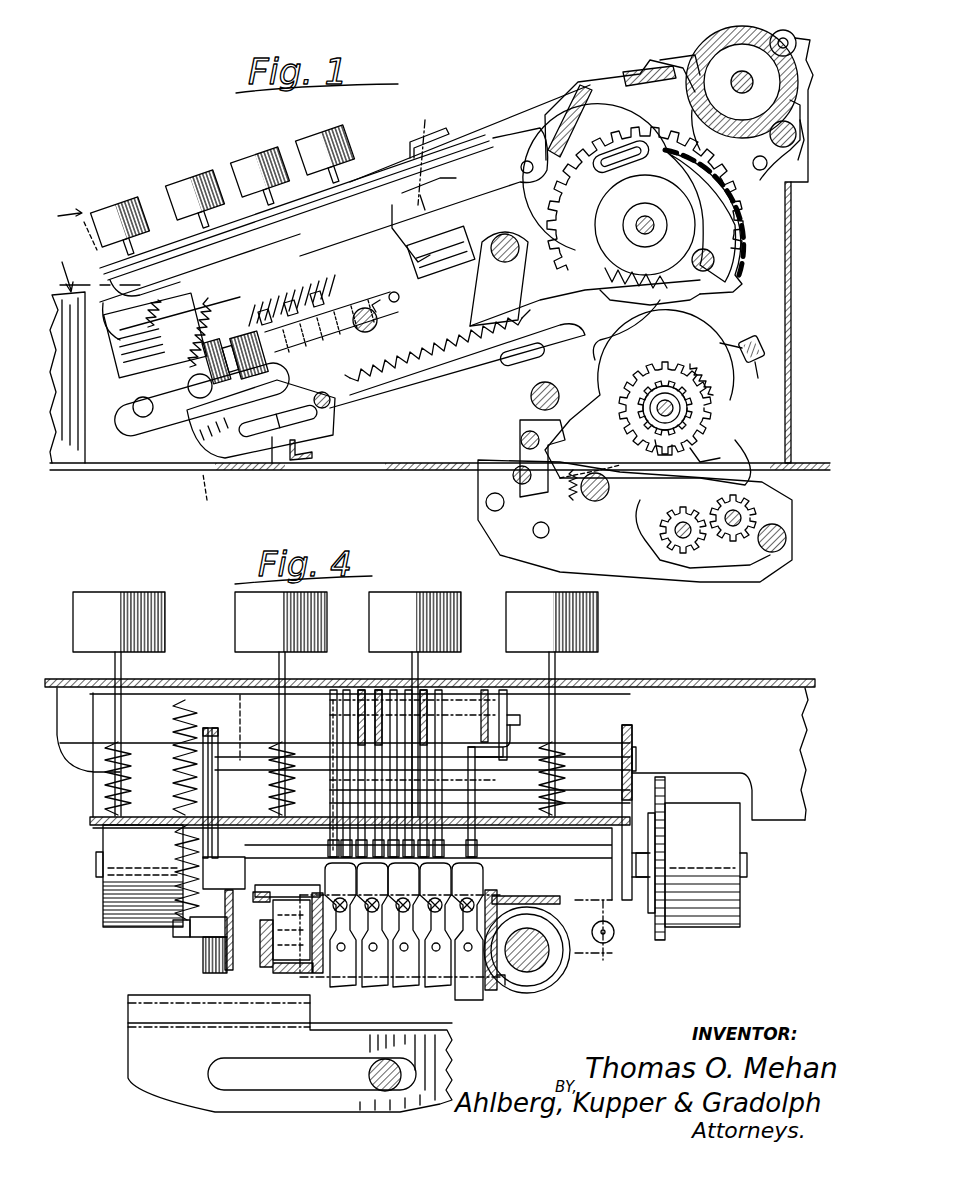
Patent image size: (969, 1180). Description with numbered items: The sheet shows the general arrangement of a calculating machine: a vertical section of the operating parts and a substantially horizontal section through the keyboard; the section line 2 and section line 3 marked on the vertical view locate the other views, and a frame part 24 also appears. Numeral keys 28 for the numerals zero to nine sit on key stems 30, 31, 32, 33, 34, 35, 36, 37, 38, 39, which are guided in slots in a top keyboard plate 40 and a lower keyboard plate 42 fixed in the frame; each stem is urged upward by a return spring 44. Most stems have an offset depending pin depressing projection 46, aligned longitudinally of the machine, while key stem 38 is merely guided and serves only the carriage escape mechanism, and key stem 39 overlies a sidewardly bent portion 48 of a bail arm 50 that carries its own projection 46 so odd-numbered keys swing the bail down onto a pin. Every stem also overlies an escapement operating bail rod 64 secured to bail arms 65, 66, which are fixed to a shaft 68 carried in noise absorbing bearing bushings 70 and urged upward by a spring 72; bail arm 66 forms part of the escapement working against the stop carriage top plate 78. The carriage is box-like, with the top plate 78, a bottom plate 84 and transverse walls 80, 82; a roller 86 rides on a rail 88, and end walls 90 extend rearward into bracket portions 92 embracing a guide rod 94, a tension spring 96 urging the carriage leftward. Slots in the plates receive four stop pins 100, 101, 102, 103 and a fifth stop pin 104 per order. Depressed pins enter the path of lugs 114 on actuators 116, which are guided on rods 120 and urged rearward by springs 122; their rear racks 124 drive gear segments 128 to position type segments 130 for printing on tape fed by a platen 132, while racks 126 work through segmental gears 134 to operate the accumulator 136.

In FIG. 1, the section line 2- 2 is at (250, 189).
In FIG. 1, the section line 3- 3 is at (133, 354).
In FIG. 4, the frame 24 is at (650, 852).
In FIG. 1, the numeral keys 28 is at (113, 226).
In FIG. 1, the key stem 30 is at (128, 238).
In FIG. 4, the key stem 30 is at (122, 673).
In FIG. 4, the key stem 31 is at (334, 690).
In FIG. 4, the key stem 32 is at (286, 673).
In FIG. 1, the key stem 33 is at (230, 197).
In FIG. 4, the key stem 33 is at (352, 690).
In FIG. 4, the key stem 34 is at (380, 690).
In FIG. 4, the key stem 35 is at (420, 670).
In FIG. 1, the key stem 36 is at (282, 192).
In FIG. 4, the key stem 36 is at (420, 690).
In FIG. 4, the key stem 37 is at (444, 690).
In FIG. 4, the key stem 38 is at (557, 671).
In FIG. 1, the key stem 39 is at (346, 166).
In FIG. 4, the key stem 39 is at (483, 690).
In FIG. 4, the top keyboard plate 40 is at (620, 680).
In FIG. 4, the lower keyboard plate 42 is at (238, 826).
In FIG. 4, the return spring 44 is at (108, 756).
In FIG. 4, the pin depressing projection 46 is at (328, 842).
In FIG. 4, the sidewardly bent portion 48 is at (480, 750).
In FIG. 4, the bail arm 50 is at (507, 705).
In FIG. 4, the escapement operating bail rod 64 is at (607, 750).
In FIG. 4, the bail arm 65 is at (634, 736).
In FIG. 4, the bail arm 66 is at (211, 736).
In FIG. 4, the shaft 68 is at (643, 870).
In FIG. 1, the noise absorbing bearing bushings 70 is at (168, 340).
In FIG. 4, the noise absorbing bearing bushings 70 is at (110, 892).
In FIG. 4, the spring 72 is at (180, 724).
In FIG. 4, the stop carriage top plate 78 is at (532, 896).
In FIG. 4, the transverse wall 80 is at (292, 976).
In FIG. 4, the transverse wall 82 is at (497, 910).
In FIG. 4, the bottom plate 84 is at (324, 973).
In FIG. 4, the roller 86 is at (304, 939).
In FIG. 4, the rail 88 is at (268, 925).
In FIG. 1, the end walls 90 is at (258, 345).
In FIG. 1, the bracket portions 92 is at (355, 300).
In FIG. 1, the guide rod 94 is at (302, 291).
In FIG. 1, the tension spring 96 is at (404, 300).
In FIG. 4, the stop pin 100 is at (342, 972).
In FIG. 4, the stop pin 101 is at (374, 972).
In FIG. 4, the stop pin 102 is at (404, 972).
In FIG. 4, the stop pin 103 is at (437, 972).
In FIG. 4, the fifth stop pin 104 is at (470, 992).
In FIG. 1, the lugs 114 is at (274, 387).
In FIG. 4, the lugs 114 is at (308, 1005).
In FIG. 1, the actuators 116 is at (392, 396).
In FIG. 4, the actuators 116 is at (326, 1108).
In FIG. 1, the rods 120 is at (324, 407).
In FIG. 4, the rods 120 is at (370, 1075).
In FIG. 1, the springs 122 is at (440, 378).
In FIG. 1, the rack 124 is at (710, 298).
In FIG. 1, the rack 126 is at (582, 398).
In FIG. 1, the gear segments 128 is at (700, 281).
In FIG. 1, the type segments 130 is at (745, 218).
In FIG. 1, the platen 132 is at (704, 62).
In FIG. 1, the segmental gears 134 is at (640, 425).
In FIG. 1, the accumulator 136 is at (702, 540).